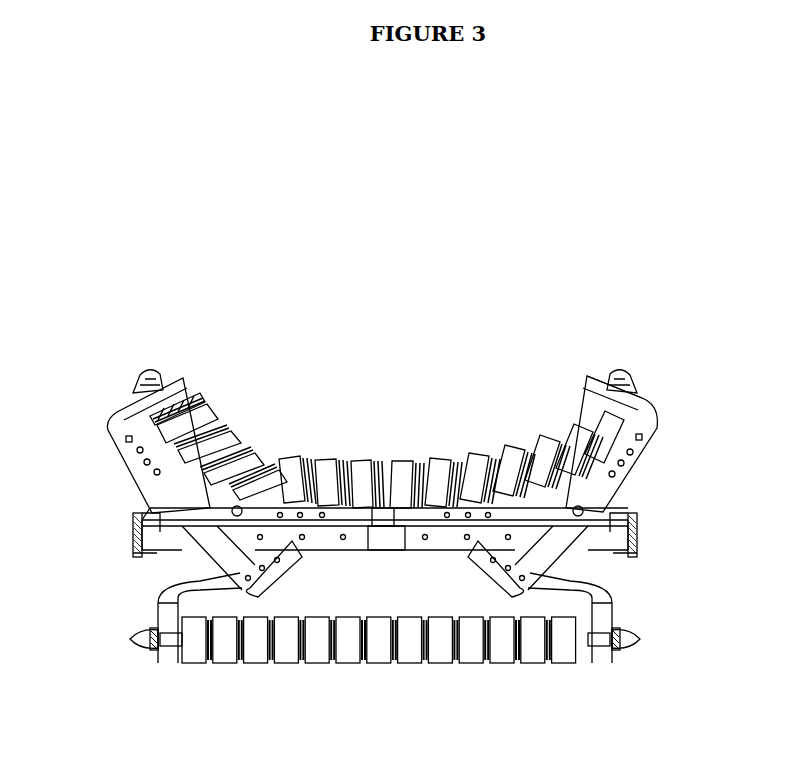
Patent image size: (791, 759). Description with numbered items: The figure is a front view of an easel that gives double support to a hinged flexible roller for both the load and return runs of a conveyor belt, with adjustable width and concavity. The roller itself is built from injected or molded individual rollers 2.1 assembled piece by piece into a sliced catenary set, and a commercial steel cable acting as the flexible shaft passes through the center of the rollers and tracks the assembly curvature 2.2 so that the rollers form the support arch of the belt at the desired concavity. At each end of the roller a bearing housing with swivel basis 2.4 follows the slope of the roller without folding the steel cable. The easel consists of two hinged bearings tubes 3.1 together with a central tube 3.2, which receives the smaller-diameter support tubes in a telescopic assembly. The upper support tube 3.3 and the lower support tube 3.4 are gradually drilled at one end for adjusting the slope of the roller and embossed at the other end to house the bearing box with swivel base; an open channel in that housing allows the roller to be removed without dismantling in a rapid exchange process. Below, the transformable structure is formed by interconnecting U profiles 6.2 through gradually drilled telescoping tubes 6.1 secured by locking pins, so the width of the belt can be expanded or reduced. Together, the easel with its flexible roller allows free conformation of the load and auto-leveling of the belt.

The individual rollers 2.1 is at (340, 462).
The assembly curvature 2.2 is at (160, 416).
The bearing housing with swivel basis 2.4 is at (135, 374).
The hinged bearings tubes 3.1 is at (150, 506).
The central tube 3.2 is at (603, 488).
The upper support tube 3.3 is at (640, 405).
The lower support tube 3.4 is at (605, 595).
The telescoping tubes 6.1 is at (380, 550).
The U profile 6.2 is at (613, 557).